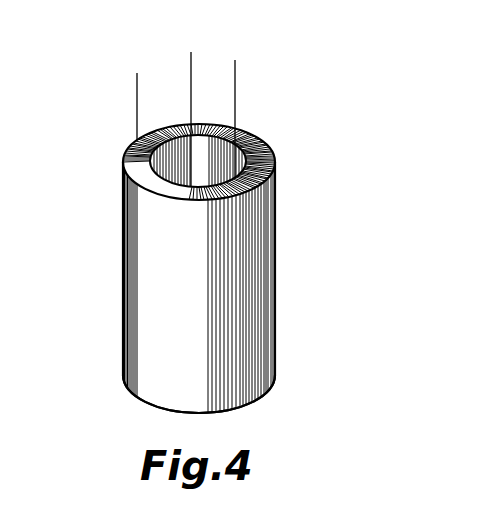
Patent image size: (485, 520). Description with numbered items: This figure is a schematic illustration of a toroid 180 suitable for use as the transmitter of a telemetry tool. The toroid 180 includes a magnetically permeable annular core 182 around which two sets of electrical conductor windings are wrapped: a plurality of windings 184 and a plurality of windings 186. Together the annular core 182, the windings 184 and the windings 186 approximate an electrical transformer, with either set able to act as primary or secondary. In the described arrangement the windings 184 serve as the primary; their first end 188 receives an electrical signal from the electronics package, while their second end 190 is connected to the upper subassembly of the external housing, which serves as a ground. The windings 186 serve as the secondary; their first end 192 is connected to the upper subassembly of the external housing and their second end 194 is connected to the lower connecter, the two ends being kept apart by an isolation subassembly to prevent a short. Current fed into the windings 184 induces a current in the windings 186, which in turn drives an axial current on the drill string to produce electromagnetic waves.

The toroid 180 is at (300, 166).
The annular core 182 is at (166, 373).
The electrical conductor windings 184 is at (257, 277).
The electrical conductor windings 186 is at (128, 275).
The first end 188 is at (235, 69).
The second end 190 is at (207, 150).
The first end 192 is at (190, 53).
The second end 194 is at (137, 110).